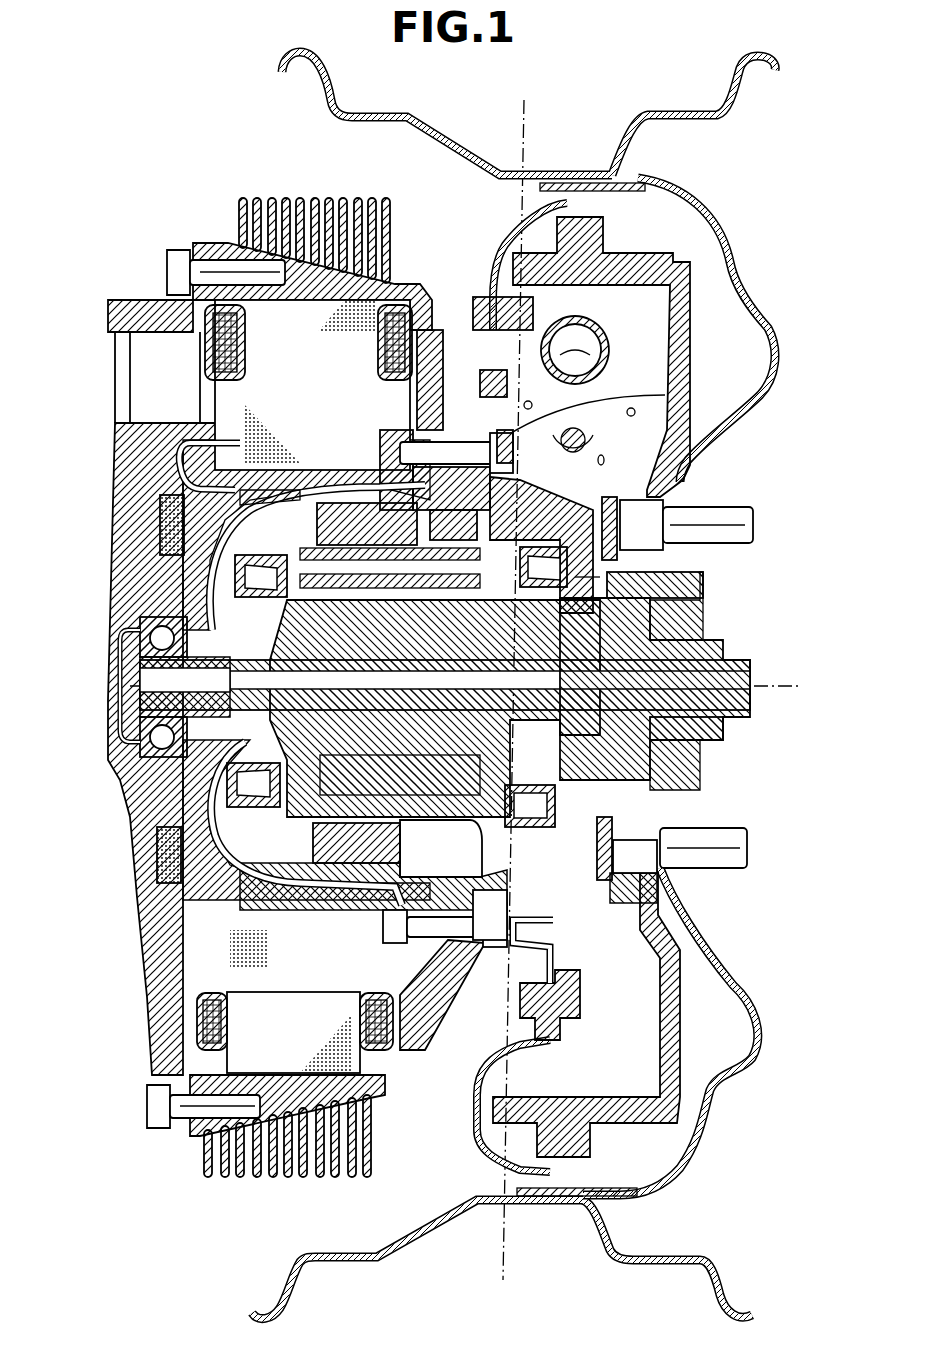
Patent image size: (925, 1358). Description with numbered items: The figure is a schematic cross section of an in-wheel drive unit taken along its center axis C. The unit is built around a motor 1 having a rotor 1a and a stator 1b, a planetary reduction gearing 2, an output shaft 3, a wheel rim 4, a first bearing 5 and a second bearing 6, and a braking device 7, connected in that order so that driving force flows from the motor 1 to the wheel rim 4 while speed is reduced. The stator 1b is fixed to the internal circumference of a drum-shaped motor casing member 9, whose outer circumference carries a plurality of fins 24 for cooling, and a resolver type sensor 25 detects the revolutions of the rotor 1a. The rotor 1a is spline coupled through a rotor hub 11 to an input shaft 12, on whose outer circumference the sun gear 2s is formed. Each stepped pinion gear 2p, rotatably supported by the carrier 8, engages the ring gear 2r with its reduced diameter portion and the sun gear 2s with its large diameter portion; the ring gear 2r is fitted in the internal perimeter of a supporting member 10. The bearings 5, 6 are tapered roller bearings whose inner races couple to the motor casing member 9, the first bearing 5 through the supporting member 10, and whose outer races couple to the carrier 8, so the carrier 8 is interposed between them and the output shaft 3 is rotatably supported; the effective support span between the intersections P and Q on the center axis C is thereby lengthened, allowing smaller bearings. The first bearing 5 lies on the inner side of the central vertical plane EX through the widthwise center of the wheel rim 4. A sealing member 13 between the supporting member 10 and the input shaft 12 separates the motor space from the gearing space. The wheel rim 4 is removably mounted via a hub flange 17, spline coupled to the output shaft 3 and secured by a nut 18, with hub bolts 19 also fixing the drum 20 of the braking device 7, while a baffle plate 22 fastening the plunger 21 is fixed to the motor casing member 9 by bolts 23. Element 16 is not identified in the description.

The motor 1 is at (447, 425).
The rotor 1a is at (235, 385).
The stator 1b is at (180, 305).
The planetary reduction gearing 2 is at (447, 490).
The ring gear 2r is at (367, 524).
The pinion gear 2p is at (453, 526).
The sun gear 2s is at (400, 775).
The output shaft 3 is at (757, 702).
The wheel rim 4 is at (560, 172).
The first bearing 5 is at (240, 585).
The second bearing 6 is at (575, 577).
The braking device 7 is at (615, 215).
The carrier 8 is at (387, 815).
The motor casing member 9 is at (467, 408).
The supporting member 10 is at (180, 455).
The rotor hub 11 is at (240, 520).
The input shaft 12 is at (130, 660).
The sealing member 13 is at (170, 628).
The hub flange 16 is at (665, 643).
The hub flange 17 is at (700, 593).
The nut 18 is at (725, 727).
The hub bolt 19 is at (755, 525).
The drum 20 is at (683, 263).
The plunger 21 is at (612, 345).
The baffle plate 22 is at (575, 203).
The bolt 23 is at (600, 430).
The fin 24 is at (297, 197).
The resolver type sensor 25 is at (162, 523).
The center axis C is at (477, 686).
The central vertical plane EX is at (523, 676).
The intersection P is at (585, 690).
The intersection Q is at (122, 680).